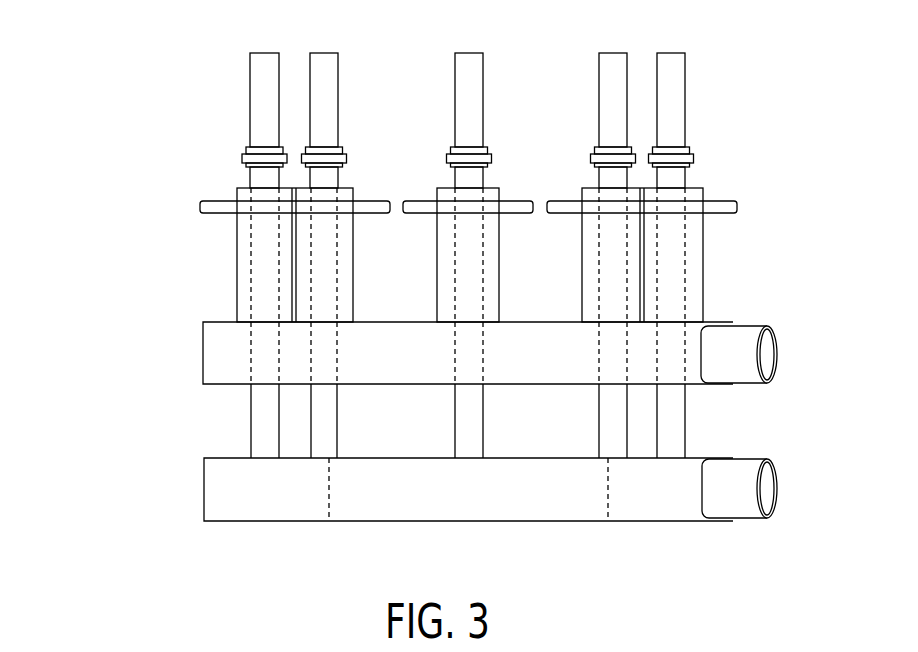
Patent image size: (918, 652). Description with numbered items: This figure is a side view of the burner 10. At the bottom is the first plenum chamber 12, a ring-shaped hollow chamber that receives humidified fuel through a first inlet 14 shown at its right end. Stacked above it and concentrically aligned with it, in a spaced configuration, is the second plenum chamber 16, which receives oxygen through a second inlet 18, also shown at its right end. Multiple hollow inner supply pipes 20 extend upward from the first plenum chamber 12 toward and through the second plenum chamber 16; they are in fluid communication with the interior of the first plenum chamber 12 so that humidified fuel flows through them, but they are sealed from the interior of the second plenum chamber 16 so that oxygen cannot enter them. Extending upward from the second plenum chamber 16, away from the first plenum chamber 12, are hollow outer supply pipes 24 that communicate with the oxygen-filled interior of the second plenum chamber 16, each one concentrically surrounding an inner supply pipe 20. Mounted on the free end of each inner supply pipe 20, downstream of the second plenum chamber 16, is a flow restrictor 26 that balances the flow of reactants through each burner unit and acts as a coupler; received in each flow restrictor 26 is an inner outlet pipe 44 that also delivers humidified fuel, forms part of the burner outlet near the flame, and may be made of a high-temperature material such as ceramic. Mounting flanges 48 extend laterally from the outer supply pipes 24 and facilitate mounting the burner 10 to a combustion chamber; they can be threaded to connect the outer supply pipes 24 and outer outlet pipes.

The burner 10 is at (110, 127).
The first plenum chamber 12 is at (212, 488).
The first inlet 14 is at (765, 488).
The second plenum chamber 16 is at (214, 350).
The second inlet 18 is at (768, 354).
The inner supply pipes 20 is at (253, 410).
The outer supply pipes 24 is at (240, 262).
The flow restrictor 26 is at (245, 157).
The inner outlet pipe 44 is at (258, 87).
The mounting flanges 48 is at (203, 205).